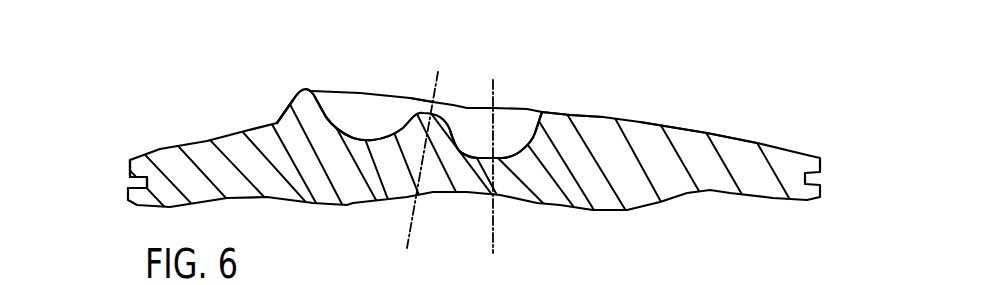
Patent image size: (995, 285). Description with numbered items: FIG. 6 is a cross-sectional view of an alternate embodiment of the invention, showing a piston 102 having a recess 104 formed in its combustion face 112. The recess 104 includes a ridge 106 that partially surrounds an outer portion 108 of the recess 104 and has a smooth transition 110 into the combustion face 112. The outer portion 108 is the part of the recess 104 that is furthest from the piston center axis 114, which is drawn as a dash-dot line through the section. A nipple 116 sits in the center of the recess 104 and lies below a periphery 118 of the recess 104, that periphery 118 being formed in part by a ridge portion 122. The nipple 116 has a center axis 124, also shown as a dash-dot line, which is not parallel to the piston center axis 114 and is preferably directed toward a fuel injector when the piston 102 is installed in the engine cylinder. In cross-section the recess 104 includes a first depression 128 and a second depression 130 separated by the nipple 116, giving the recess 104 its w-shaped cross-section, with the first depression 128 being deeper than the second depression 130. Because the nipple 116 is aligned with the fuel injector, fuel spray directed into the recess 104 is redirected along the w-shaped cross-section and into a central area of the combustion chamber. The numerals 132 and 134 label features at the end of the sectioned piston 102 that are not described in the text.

The piston 102 is at (790, 108).
The recess 104 is at (537, 37).
The ridge 106 is at (302, 102).
The outer portion 108 is at (540, 110).
The smooth transition 110 is at (455, 104).
The combustion face 112 is at (673, 123).
The piston center axis 114 is at (497, 214).
The nipple 116 is at (422, 90).
The periphery 118 is at (517, 107).
The ridge portion 122 is at (312, 88).
The center axis 124 is at (407, 227).
The first depression 128 is at (482, 162).
The second depression 130 is at (348, 135).
The end face 132 is at (130, 160).
The notch 134 is at (128, 182).